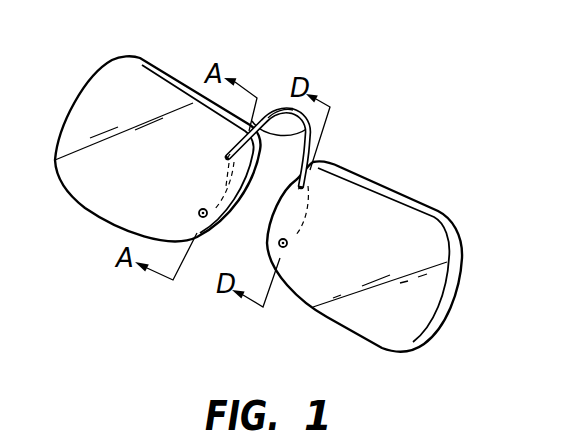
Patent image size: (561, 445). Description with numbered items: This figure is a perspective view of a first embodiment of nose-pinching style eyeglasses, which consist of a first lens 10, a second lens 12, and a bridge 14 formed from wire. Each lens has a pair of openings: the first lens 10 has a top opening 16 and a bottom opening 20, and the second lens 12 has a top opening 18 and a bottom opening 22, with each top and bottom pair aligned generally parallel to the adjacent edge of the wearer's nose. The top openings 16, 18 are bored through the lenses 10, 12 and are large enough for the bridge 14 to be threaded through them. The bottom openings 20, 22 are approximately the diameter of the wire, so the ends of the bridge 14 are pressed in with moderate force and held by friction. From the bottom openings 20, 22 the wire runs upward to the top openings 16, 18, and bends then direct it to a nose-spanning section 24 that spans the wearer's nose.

The first lens 10 is at (140, 68).
The second lens 12 is at (440, 210).
The bridge 14 is at (322, 130).
The top opening 16 is at (226, 155).
The top opening 18 is at (299, 187).
The bottom opening 20 is at (199, 211).
The bottom opening 22 is at (287, 244).
The nose-spanning section 24 is at (277, 110).